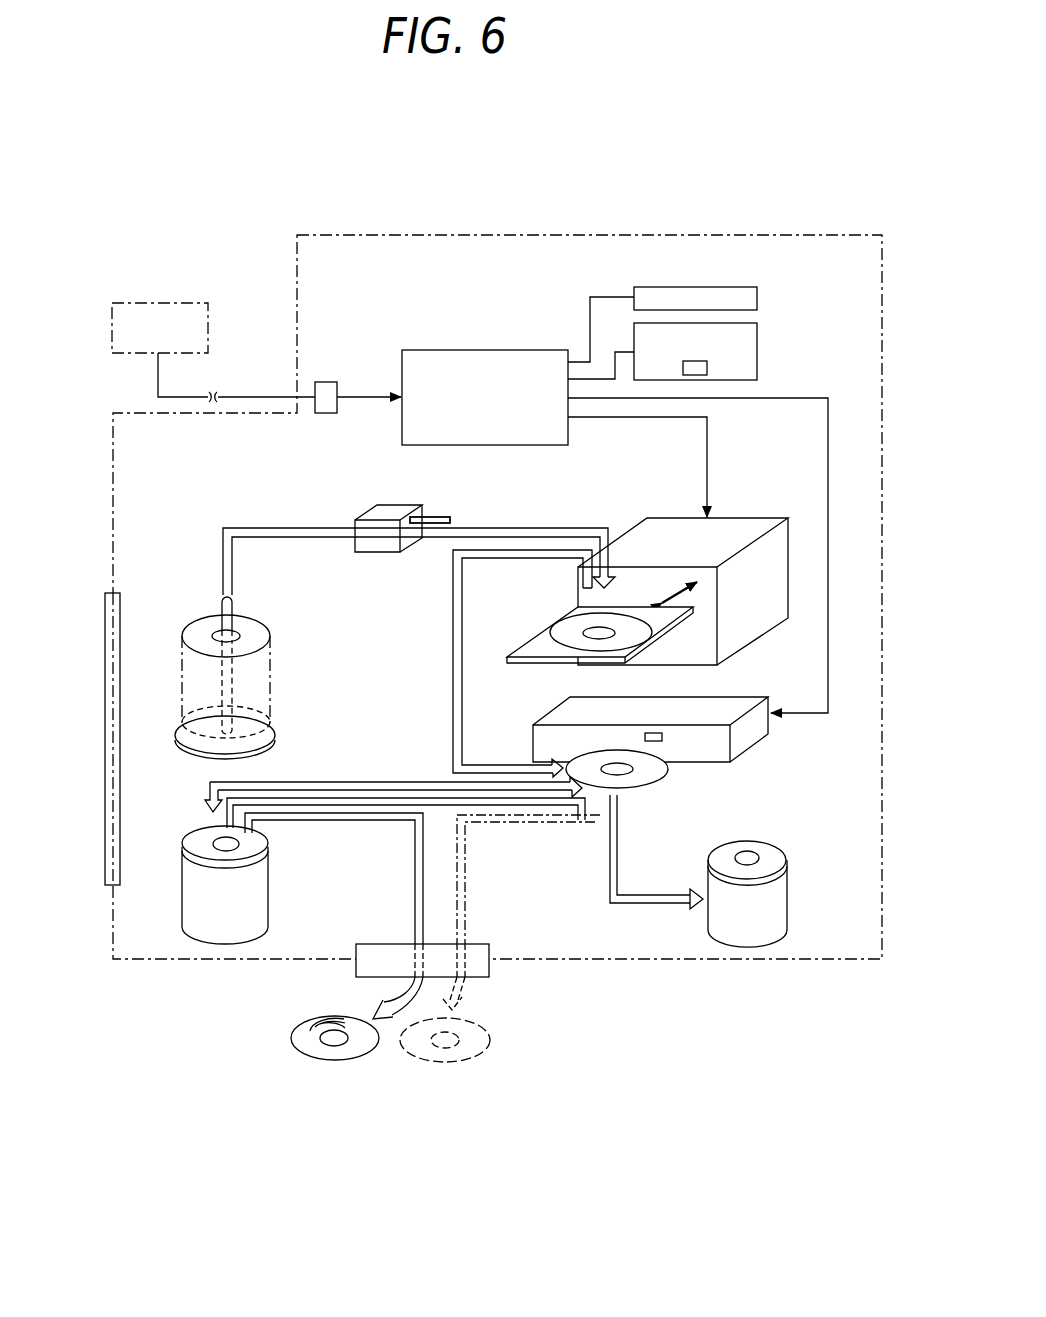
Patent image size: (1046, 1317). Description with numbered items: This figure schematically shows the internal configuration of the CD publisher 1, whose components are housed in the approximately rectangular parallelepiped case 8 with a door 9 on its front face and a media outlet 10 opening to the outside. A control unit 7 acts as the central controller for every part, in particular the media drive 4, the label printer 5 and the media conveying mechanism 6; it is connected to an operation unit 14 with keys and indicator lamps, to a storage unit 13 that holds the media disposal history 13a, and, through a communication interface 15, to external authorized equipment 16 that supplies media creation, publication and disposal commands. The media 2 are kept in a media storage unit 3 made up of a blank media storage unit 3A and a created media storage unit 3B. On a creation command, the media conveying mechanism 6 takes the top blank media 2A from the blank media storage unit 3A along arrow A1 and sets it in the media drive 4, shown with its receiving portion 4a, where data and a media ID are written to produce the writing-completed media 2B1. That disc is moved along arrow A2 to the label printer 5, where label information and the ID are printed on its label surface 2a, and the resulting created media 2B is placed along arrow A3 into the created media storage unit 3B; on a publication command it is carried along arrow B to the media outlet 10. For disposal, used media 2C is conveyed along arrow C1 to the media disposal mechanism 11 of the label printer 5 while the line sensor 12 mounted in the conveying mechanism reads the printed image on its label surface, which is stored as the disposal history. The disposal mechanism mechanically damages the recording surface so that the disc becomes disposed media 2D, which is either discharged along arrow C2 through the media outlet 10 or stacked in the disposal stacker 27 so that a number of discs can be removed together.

The CD publisher 1 is at (594, 218).
The media 2 is at (258, 848).
The blank media 2A is at (256, 640).
The created media 2B is at (353, 1062).
The used media 2C is at (660, 770).
The disposed media 2D is at (457, 1063).
The label surface 2a is at (562, 633).
The writing-completed media 2B1 is at (563, 648).
The media storage unit 3 is at (293, 730).
The blank media storage unit 3A is at (165, 640).
The created media storage unit 3B is at (172, 832).
The media drive 4 is at (744, 520).
The drive tray 4a is at (653, 632).
The label printer 5 is at (758, 728).
The media conveying mechanism 6 is at (379, 510).
The control unit 7 is at (478, 349).
The case 8 is at (384, 233).
The door 9 is at (103, 675).
The media outlet 10 is at (471, 978).
The media disposal mechanism 11 is at (663, 737).
The line sensor 12 is at (440, 512).
The storage unit 13 is at (758, 347).
The media disposal history 13a is at (707, 368).
The operation unit 14 is at (732, 286).
The communication interface 15 is at (324, 381).
The authorized equipment 16 is at (146, 302).
The disposal stacker 27 is at (787, 890).
The arrow A1 is at (267, 528).
The arrow A2 is at (458, 602).
The arrow A3 is at (327, 780).
The arrow B is at (415, 883).
The arrow C1 is at (428, 782).
The arrow C2 is at (463, 892).